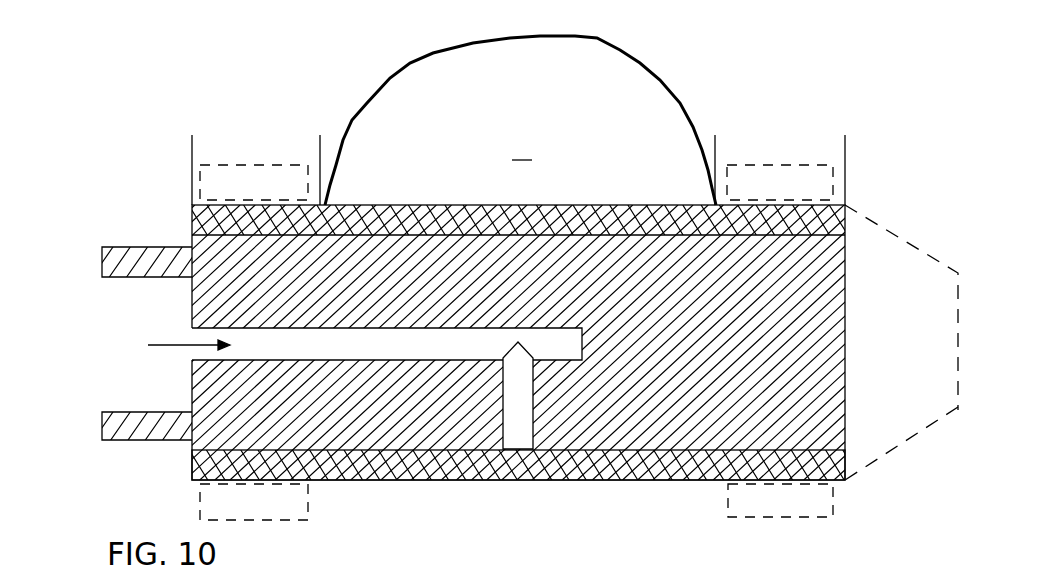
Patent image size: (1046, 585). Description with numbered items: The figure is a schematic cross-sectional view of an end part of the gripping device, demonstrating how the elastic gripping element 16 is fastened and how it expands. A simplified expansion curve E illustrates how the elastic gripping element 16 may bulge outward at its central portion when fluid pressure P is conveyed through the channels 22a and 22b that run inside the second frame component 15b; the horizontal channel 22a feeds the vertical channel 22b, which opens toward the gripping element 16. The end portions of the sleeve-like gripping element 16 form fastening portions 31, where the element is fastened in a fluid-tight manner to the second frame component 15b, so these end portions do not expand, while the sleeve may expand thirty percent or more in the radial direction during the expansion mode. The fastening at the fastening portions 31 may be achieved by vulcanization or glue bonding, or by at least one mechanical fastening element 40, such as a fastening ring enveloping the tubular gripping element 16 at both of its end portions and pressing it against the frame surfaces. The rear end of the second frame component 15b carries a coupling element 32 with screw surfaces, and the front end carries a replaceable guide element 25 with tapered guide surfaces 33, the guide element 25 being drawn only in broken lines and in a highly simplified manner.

The second frame component 15b is at (698, 415).
The elastic gripping element 16 is at (613, 467).
The channel 22a is at (338, 343).
The channel 22b is at (515, 407).
The replaceable guide element 25 is at (900, 237).
The fastening portions 31 is at (192, 145).
The coupling element 32 is at (140, 247).
The tapered guide surfaces 33 is at (917, 448).
The mechanical fastening element 40 is at (255, 522).
The expansion curve E is at (378, 63).
The fluid pressure P is at (329, 246).